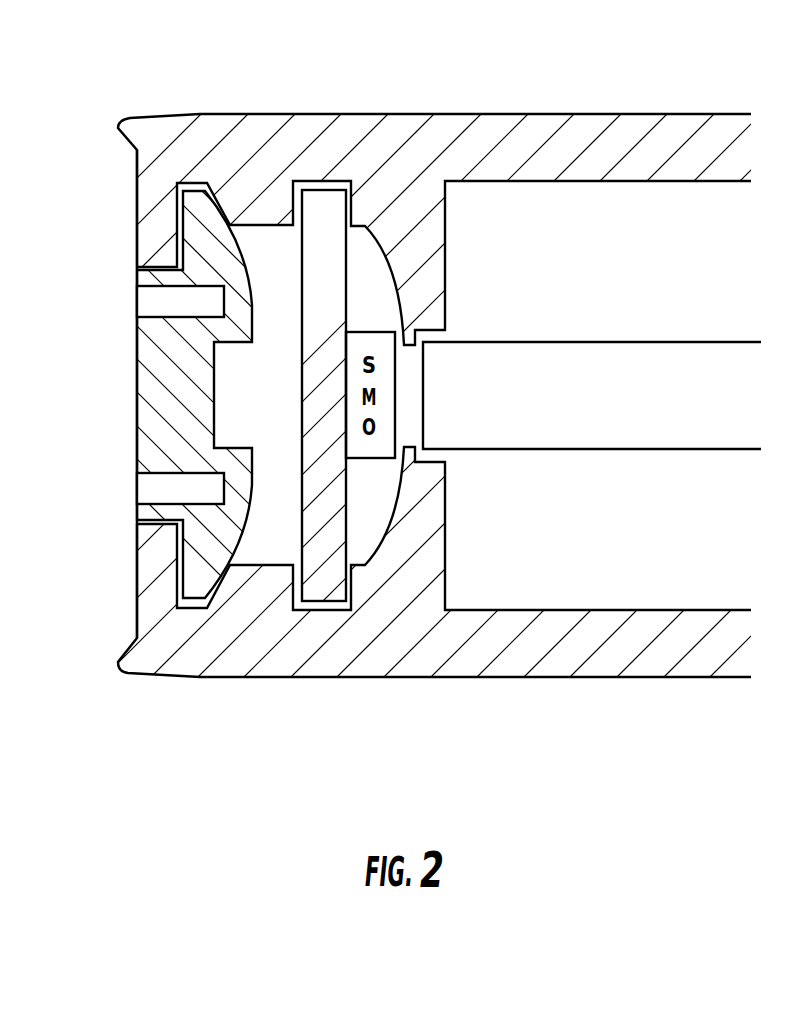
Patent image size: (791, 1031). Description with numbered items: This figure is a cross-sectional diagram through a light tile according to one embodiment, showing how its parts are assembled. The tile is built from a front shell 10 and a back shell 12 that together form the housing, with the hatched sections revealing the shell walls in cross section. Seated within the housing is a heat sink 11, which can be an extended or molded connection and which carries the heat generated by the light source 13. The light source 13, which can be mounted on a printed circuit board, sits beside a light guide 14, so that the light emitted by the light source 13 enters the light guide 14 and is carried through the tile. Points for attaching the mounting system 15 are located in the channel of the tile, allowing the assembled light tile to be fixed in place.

The front shell 10 is at (433, 118).
The heat sink 11 is at (338, 394).
The back shell 12 is at (400, 648).
The light source 13 is at (322, 213).
The light guide 14 is at (547, 408).
The mounting system 15 is at (158, 495).